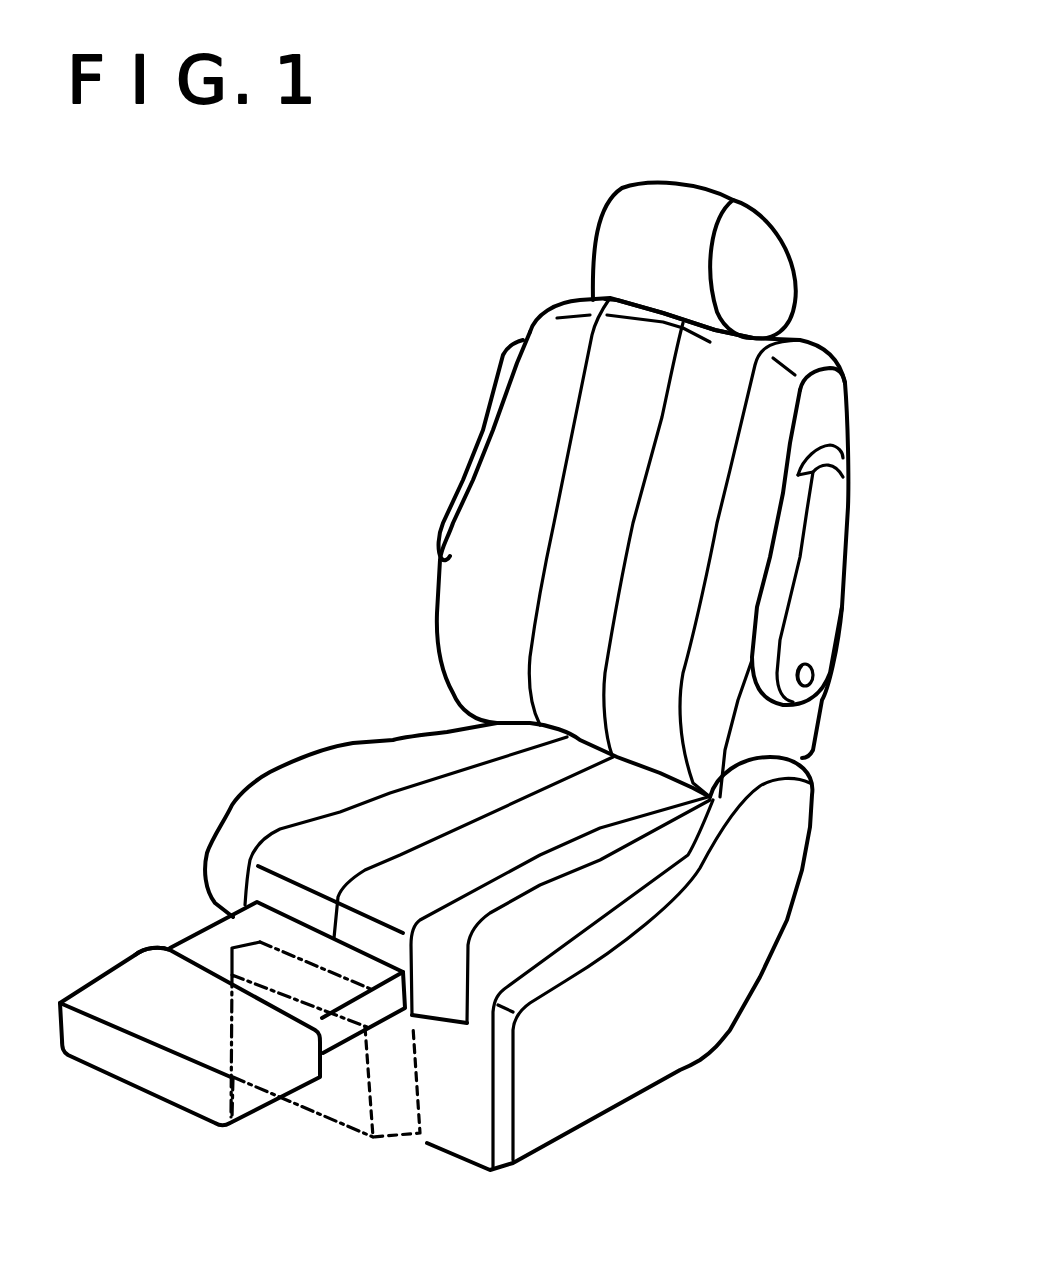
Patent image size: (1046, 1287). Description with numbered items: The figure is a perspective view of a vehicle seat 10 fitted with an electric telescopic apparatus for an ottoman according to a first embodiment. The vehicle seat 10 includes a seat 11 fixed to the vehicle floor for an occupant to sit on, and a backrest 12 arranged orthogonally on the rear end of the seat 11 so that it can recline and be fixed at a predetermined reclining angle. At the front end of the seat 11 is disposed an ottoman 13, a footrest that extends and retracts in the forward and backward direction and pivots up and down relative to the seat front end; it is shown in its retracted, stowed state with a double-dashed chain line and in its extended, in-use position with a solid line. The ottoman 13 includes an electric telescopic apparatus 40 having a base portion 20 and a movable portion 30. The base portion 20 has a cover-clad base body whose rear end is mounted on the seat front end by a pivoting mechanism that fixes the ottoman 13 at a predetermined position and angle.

The vehicle seat 10 is at (697, 167).
The seat 11 is at (331, 757).
The backrest 12 is at (838, 410).
The ottoman 13 is at (158, 921).
The base portion 20 is at (236, 935).
The movable portion 30 is at (110, 1075).
The electric telescopic apparatus 40 is at (122, 948).